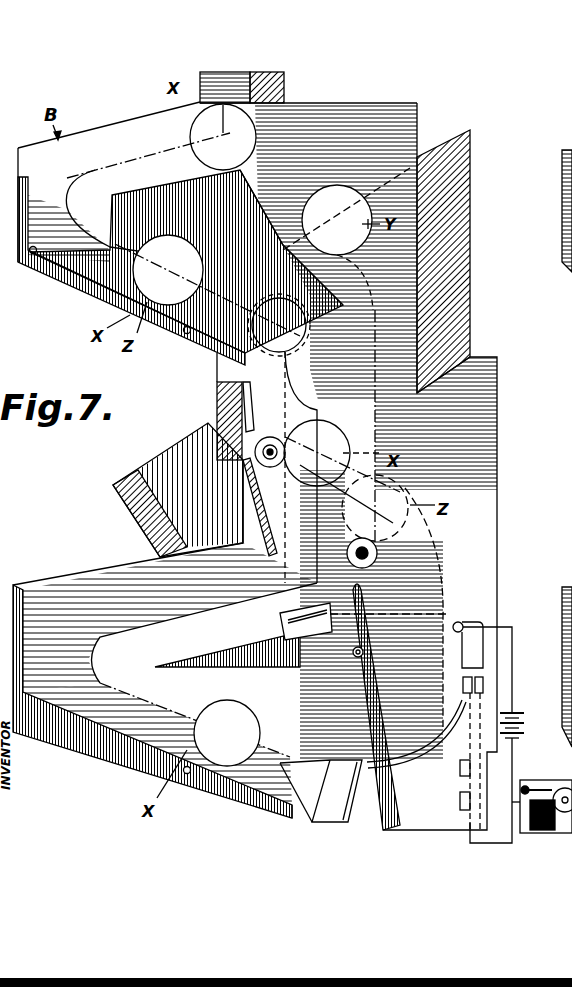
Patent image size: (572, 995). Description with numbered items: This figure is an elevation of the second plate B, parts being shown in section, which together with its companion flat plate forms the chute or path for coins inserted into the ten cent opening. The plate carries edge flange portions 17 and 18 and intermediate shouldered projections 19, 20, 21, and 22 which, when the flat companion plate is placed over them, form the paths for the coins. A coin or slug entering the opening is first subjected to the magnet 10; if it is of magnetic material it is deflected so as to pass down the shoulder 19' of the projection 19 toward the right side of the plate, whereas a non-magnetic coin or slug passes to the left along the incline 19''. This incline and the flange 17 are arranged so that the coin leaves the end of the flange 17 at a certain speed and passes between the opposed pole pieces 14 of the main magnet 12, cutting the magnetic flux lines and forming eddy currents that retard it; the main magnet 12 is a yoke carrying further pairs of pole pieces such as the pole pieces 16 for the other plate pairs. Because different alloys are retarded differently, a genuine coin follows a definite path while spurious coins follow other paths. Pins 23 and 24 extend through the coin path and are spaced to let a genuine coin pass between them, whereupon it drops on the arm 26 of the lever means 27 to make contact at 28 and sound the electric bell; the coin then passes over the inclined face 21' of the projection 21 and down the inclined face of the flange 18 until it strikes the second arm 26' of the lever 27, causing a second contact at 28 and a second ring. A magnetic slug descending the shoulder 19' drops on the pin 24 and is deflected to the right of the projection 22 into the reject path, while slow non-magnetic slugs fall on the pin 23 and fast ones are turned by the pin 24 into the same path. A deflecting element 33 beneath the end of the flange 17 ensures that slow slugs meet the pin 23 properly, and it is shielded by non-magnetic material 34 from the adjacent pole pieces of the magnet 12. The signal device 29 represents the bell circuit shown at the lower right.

The magnet 10 is at (284, 82).
The main magnet 12 is at (458, 240).
The pole piece 14 is at (305, 326).
The pole piece 16 is at (140, 528).
The edge flange portion 17 is at (98, 290).
The edge flange portion 18 is at (127, 752).
The shouldered projection 19 is at (186, 261).
The shoulder 19' is at (291, 223).
The incline 19'' is at (187, 136).
The shouldered projection 20 is at (260, 547).
The shouldered projection 21 is at (227, 666).
The inclined face 21' is at (263, 620).
The shouldered projection 22 is at (358, 675).
The pin 23 is at (262, 456).
The pin 24 is at (378, 542).
The arm 26 is at (398, 628).
The arm 26' is at (321, 805).
The lever means 27 is at (462, 622).
The contact 28 is at (483, 680).
The signal device 29 is at (571, 786).
The deflecting element 33 is at (247, 405).
The non-magnetic material 34 is at (247, 423).